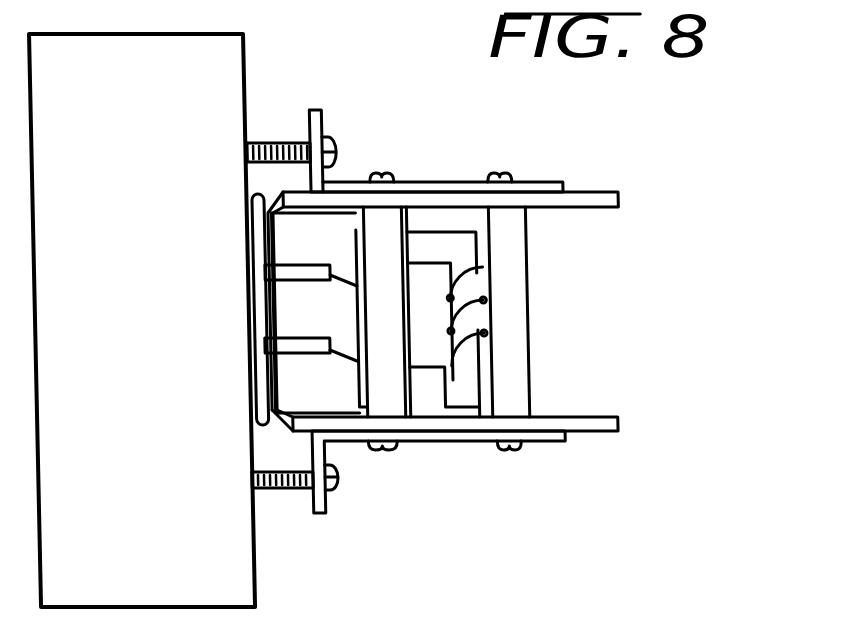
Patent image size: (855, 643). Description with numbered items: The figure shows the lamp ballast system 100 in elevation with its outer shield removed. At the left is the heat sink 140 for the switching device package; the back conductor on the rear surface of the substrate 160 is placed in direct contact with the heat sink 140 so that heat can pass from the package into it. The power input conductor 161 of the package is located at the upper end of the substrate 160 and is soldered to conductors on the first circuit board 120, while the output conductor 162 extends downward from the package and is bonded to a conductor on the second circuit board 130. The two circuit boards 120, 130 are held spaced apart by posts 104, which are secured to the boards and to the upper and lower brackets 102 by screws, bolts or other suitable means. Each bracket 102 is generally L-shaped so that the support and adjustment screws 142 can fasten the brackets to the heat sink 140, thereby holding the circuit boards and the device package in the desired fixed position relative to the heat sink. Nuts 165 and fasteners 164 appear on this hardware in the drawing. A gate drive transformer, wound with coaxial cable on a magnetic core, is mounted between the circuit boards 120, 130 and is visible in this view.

The mounting assembly 100 is at (291, 68).
The brackets 102 is at (474, 170).
The posts 104 is at (536, 355).
The first circuit board 120 is at (596, 195).
The second circuit board 130 is at (596, 437).
The heat sink 140 is at (158, 338).
The support and adjustment screws 142 is at (282, 140).
The substrate 160 is at (246, 197).
The power input conductor 161 is at (316, 180).
The output conductor 162 is at (288, 445).
The terminals 164 is at (287, 290).
The nuts 165 is at (390, 176).